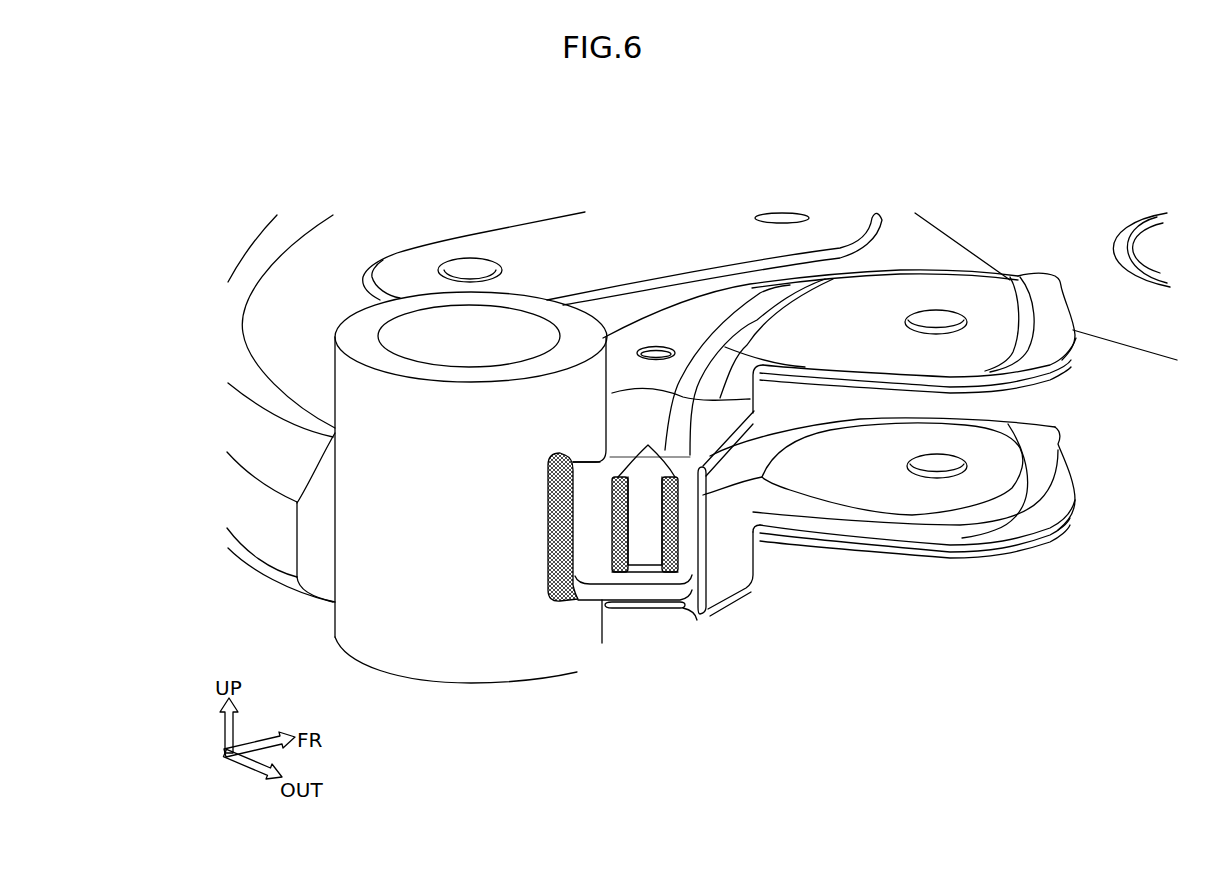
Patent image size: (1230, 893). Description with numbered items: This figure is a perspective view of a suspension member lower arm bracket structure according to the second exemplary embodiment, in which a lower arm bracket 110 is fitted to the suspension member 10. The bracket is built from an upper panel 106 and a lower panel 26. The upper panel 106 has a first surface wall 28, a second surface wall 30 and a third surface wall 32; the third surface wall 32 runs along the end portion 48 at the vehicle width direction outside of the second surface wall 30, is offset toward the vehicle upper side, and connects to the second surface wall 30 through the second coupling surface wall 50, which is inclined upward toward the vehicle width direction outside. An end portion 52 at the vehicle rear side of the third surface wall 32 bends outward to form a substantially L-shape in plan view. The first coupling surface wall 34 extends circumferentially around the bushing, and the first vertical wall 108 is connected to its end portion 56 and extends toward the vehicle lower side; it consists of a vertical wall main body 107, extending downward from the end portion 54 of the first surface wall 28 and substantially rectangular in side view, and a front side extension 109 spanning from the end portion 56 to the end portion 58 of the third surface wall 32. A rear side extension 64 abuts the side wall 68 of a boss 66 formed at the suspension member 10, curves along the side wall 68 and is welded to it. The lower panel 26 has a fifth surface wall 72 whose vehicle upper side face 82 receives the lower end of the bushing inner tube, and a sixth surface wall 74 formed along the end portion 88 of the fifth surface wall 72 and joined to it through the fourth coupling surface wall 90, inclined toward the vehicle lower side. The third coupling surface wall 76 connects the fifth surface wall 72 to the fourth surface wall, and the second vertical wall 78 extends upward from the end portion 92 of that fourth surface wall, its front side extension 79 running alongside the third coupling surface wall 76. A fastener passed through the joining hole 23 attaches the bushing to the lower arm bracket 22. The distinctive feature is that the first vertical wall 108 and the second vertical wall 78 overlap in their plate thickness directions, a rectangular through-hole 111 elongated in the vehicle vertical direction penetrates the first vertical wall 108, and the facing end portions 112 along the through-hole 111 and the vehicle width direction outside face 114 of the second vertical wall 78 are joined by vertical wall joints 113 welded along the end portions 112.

The suspension member 10 is at (566, 259).
The lower arm bracket 22 is at (927, 458).
The joining hole 23 is at (925, 318).
The lower panel 26 is at (1013, 550).
The first surface wall 28 is at (650, 400).
The second surface wall 30 is at (855, 347).
The third surface wall 32 is at (790, 365).
The first coupling surface wall 34 is at (712, 358).
The end portion 48 is at (980, 375).
The second coupling surface wall 50 is at (1012, 280).
The end portion 52 is at (758, 353).
The end portion 54 is at (605, 437).
The end portion 56 is at (690, 382).
The end portion 58 is at (758, 397).
The rear side extension 64 is at (598, 585).
The boss 66 is at (460, 683).
The side wall 68 is at (445, 462).
The fifth surface wall 72 is at (812, 471).
The sixth surface wall 74 is at (718, 606).
The third coupling surface wall 76 is at (700, 618).
The second vertical wall 78 is at (664, 604).
The front side extension 79 is at (740, 600).
The vehicle upper side face 82 is at (855, 496).
The end portion 88 is at (988, 496).
The fourth coupling surface wall 90 is at (1018, 484).
The end portion 92 is at (622, 608).
The upper panel 106 is at (1040, 263).
The vertical wall main body 107 is at (582, 550).
The first vertical wall 108 is at (602, 643).
The front side extension 109 is at (756, 413).
The lower arm bracket 110 is at (1073, 307).
The through-hole 111 is at (650, 572).
The facing end portions 112 is at (622, 522).
The vertical wall joints 113 is at (648, 444).
The vehicle width direction outside face 114 is at (650, 535).